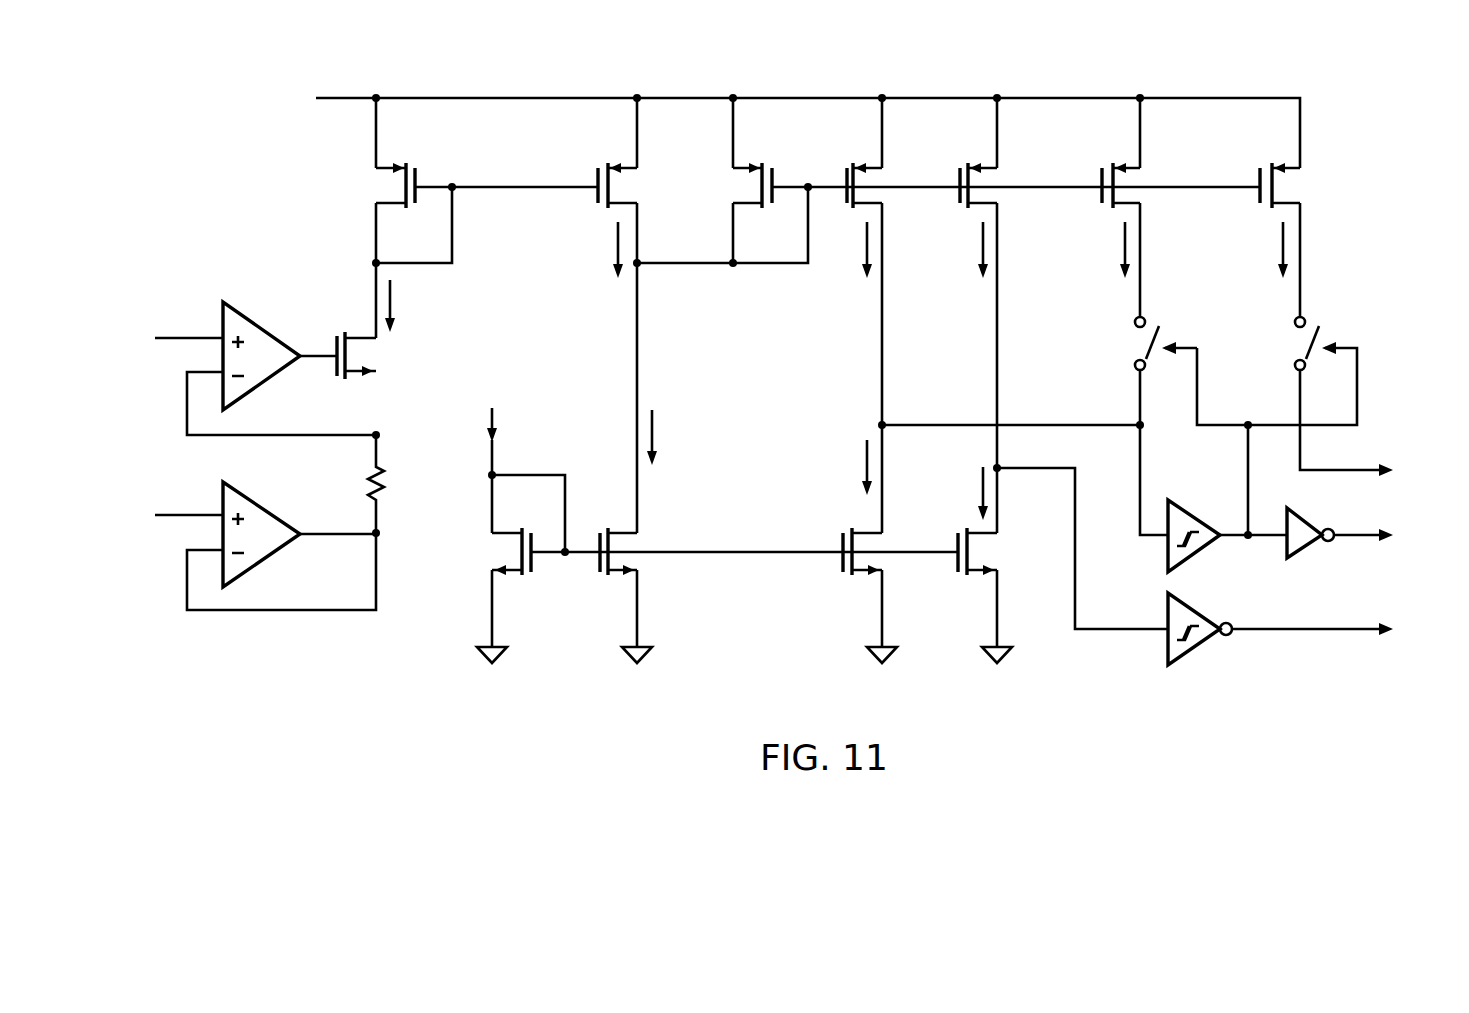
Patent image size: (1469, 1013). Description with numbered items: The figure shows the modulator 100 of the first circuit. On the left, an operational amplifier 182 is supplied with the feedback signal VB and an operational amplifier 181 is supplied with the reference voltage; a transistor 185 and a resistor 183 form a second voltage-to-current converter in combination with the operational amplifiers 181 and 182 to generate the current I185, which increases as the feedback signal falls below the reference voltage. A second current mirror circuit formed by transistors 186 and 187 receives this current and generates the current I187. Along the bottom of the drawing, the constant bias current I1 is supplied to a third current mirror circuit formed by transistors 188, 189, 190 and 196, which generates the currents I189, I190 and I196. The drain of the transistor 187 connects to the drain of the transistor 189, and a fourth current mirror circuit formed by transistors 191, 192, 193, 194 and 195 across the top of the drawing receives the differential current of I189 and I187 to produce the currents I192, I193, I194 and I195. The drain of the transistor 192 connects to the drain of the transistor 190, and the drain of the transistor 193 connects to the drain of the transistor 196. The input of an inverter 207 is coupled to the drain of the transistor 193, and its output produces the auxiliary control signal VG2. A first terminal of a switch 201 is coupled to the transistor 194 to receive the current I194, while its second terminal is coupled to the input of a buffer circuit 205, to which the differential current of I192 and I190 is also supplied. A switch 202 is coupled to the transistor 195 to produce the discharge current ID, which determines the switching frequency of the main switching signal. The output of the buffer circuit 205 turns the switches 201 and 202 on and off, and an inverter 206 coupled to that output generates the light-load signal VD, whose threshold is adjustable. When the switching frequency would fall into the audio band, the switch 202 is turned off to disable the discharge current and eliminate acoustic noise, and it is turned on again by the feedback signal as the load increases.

The modulator 100 is at (1401, 60).
The operational amplifier 181 is at (270, 327).
The operational amplifier 182 is at (270, 505).
The resistor 183 is at (388, 483).
The transistor 185 is at (378, 356).
The transistor 186 is at (410, 160).
The transistor 187 is at (637, 190).
The transistor 188 is at (492, 553).
The transistor 189 is at (645, 562).
The transistor 190 is at (838, 533).
The transistor 191 is at (777, 176).
The transistor 192 is at (890, 176).
The transistor 193 is at (1005, 176).
The transistor 194 is at (1148, 176).
The transistor 195 is at (1297, 188).
The transistor 196 is at (958, 535).
The switch 201 is at (1125, 347).
The switch 202 is at (1288, 346).
The buffer circuit 205 is at (1190, 507).
The inverter 206 is at (1307, 552).
The inverter 207 is at (1197, 648).